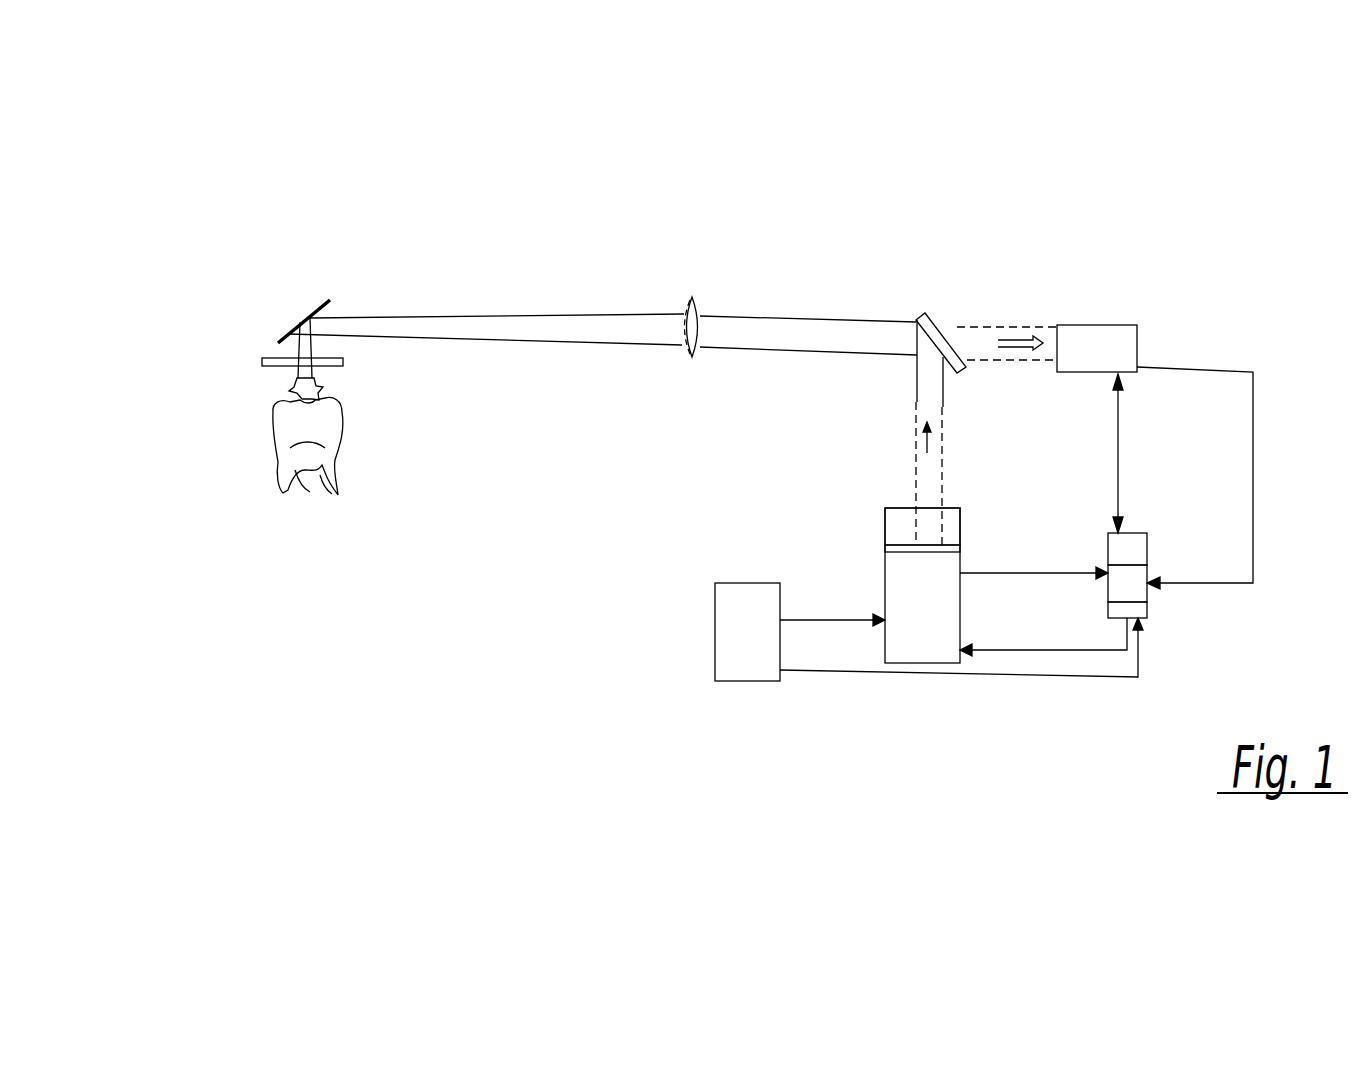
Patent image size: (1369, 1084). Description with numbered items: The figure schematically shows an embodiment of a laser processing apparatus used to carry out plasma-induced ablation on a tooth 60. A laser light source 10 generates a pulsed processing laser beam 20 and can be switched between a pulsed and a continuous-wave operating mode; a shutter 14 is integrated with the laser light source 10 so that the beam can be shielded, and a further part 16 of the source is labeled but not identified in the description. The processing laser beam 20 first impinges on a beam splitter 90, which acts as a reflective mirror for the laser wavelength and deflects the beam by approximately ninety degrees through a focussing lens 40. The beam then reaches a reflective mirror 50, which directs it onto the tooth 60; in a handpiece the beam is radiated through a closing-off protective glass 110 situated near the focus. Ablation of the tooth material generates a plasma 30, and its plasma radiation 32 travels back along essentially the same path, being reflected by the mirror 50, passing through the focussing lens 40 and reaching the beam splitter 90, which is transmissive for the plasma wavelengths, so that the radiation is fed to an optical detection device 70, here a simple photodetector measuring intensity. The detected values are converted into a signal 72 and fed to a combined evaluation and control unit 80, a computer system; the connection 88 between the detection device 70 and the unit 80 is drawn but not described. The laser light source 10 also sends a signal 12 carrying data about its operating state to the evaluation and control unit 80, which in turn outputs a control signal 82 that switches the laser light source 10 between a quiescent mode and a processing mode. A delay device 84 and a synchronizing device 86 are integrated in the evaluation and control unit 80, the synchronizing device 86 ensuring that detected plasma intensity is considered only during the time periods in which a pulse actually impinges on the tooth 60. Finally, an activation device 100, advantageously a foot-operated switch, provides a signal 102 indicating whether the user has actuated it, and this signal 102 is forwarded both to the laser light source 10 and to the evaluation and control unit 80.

The laser light source 10 is at (922, 585).
The signal 12 is at (1034, 562).
The shutter 14 is at (960, 543).
The laser housing 16 is at (888, 525).
The processing laser beam 20 is at (537, 315).
The plasma 30 is at (310, 387).
The plasma radiation 32 is at (962, 326).
The focussing lens 40 is at (702, 305).
The reflective mirror 50 is at (285, 332).
The tooth 60 is at (273, 417).
The optical detection device 70 is at (1097, 348).
The signal 72 is at (1215, 478).
The evaluation and control unit 80 is at (1127, 584).
The control signal 82 is at (1043, 637).
The delay device 84 is at (1132, 608).
The synchronizing device 86 is at (1133, 547).
The detector-control connection 88 is at (1135, 453).
The beam splitter 90 is at (920, 315).
The activation device 100 is at (747, 632).
The signal 102 is at (961, 636).
The protective glass 110 is at (262, 362).